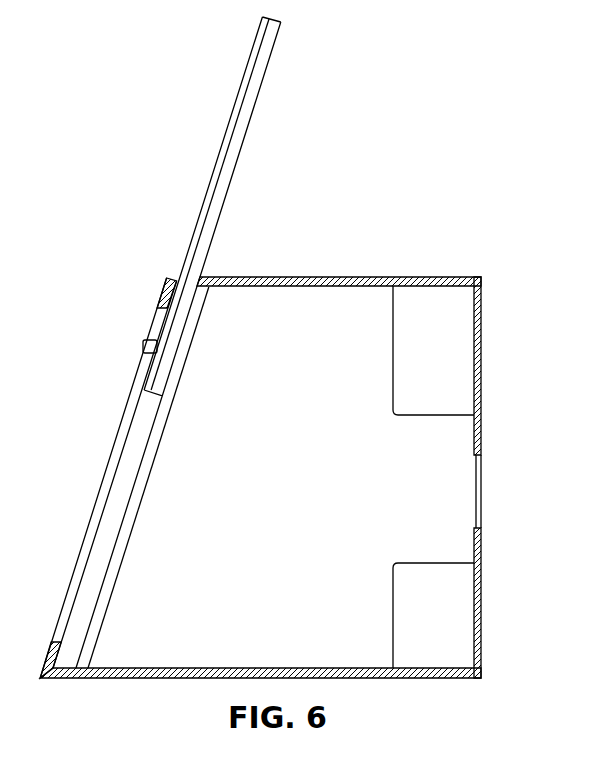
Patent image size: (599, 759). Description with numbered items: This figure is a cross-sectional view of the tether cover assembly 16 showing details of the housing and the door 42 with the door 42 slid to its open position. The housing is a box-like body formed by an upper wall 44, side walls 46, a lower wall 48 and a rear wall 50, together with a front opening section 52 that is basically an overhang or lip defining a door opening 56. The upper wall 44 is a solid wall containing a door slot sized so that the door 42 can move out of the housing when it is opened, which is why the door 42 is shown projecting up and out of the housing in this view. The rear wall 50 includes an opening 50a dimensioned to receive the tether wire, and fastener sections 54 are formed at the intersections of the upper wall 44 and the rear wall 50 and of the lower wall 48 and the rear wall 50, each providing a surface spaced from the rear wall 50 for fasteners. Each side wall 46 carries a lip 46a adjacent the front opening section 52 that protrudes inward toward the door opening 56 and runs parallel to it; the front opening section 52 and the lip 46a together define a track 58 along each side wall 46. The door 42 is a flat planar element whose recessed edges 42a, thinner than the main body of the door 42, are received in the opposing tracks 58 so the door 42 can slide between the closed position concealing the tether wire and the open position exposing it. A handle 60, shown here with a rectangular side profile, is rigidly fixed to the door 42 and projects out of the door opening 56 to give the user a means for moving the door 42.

The tether cover assembly 16 is at (458, 184).
The door 42 is at (197, 342).
The recessed edges 42a is at (258, 53).
The upper wall 44 is at (340, 277).
The side walls 46 is at (276, 326).
The lip 46a is at (98, 619).
The lower wall 48 is at (268, 667).
The rear wall 50 is at (511, 477).
The opening 50a is at (477, 511).
The front opening section 52 is at (164, 286).
The fastener sections 54 is at (425, 562).
The door opening 56 is at (99, 460).
The track 58 is at (126, 479).
The handle 60 is at (143, 346).